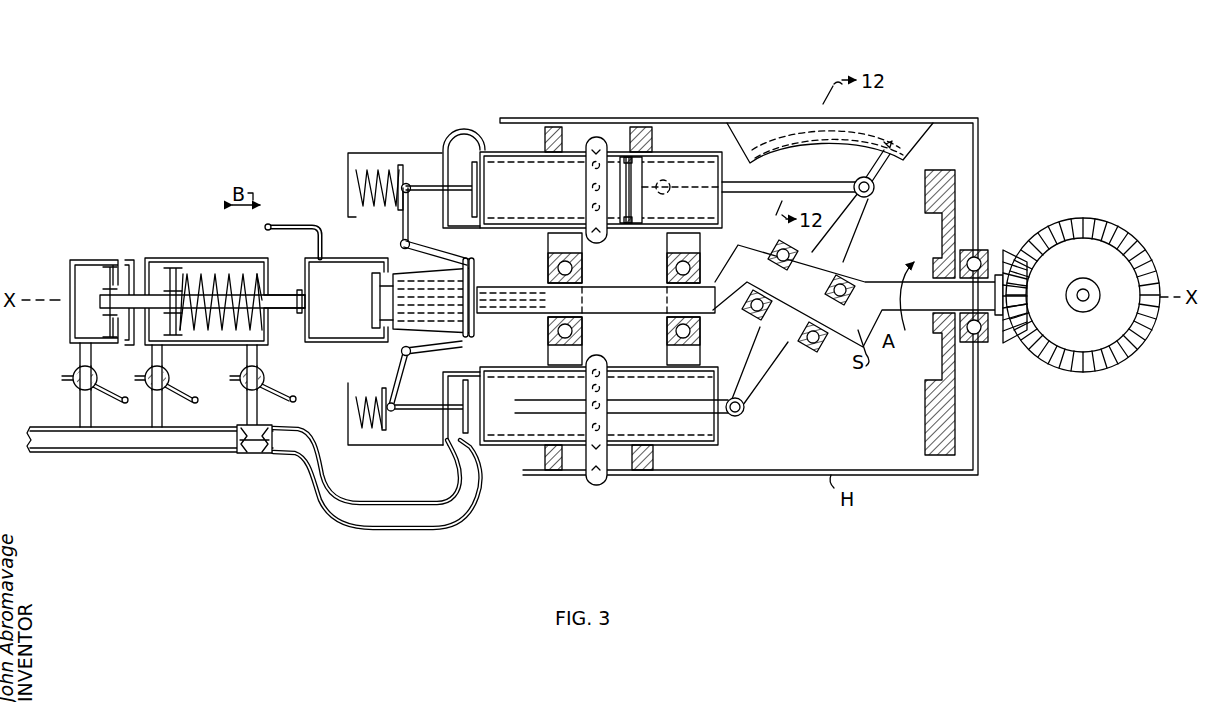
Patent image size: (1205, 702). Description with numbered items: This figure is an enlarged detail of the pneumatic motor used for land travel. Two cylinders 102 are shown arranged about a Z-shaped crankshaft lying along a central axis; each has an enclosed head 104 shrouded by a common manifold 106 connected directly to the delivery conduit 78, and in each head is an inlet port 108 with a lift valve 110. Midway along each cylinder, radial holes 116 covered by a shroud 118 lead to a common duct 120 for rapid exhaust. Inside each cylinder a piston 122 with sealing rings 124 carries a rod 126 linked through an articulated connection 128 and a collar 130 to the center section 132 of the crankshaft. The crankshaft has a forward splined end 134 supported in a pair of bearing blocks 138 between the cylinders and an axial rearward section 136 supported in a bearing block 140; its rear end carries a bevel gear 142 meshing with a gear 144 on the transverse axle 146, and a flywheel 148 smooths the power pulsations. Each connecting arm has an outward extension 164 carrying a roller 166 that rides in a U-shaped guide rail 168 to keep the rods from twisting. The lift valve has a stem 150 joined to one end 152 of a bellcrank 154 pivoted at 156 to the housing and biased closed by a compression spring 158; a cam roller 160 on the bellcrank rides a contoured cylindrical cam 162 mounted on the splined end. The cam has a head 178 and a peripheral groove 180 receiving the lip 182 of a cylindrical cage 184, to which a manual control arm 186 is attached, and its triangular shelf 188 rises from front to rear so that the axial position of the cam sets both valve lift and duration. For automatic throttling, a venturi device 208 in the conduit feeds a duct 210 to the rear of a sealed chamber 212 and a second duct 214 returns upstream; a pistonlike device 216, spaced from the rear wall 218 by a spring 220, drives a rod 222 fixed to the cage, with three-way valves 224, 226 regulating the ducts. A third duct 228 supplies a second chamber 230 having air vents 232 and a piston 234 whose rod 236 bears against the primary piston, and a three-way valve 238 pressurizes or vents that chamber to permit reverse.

The delivery conduit 78 is at (108, 443).
The cylinder 102 is at (495, 150).
The enclosed head 104 is at (478, 220).
The common manifold 106 is at (461, 132).
The inlet port 108 is at (478, 425).
The lift valve 110 is at (460, 420).
The radial holes 116 is at (590, 427).
The shroud 118 is at (601, 356).
The common duct 120 is at (598, 329).
The piston 122 is at (686, 160).
The sealing rings 124 is at (632, 156).
The rod 126 is at (765, 193).
The articulated connection 128 is at (858, 224).
The collar 130 is at (810, 362).
The center section 132 is at (842, 256).
The splined end 134 is at (528, 286).
The axial rearward section 136 is at (895, 313).
The bearing blocks 138 is at (666, 263).
The bearing block 140 is at (988, 344).
The bevel gear 142 is at (1004, 250).
The gear 144 is at (1110, 220).
The transverse axle 146 is at (1092, 310).
The flywheel 148 is at (940, 452).
The stem 150 is at (428, 186).
The end of bellcrank 152 is at (402, 182).
The bellcrank 154 is at (403, 222).
The pivot 156 is at (400, 244).
The compression spring 158 is at (356, 176).
The cam roller 160 is at (474, 342).
The contoured cylindrical cam 162 is at (474, 325).
The outward extension 164 is at (872, 165).
The roller 166 is at (881, 140).
The U-shaped guide rail 168 is at (915, 133).
The head 178 is at (372, 313).
The peripheral groove 180 is at (372, 273).
The lip 182 is at (403, 355).
The cylindrical cage 184 is at (320, 342).
The control arm 186 is at (306, 224).
The shelf 188 is at (430, 350).
The venturi device 208 is at (245, 452).
The duct 210 is at (258, 413).
The sealed chamber 212 is at (210, 262).
The second duct 214 is at (163, 413).
The pistonlike device 216 is at (172, 268).
The rear wall 218 is at (270, 335).
The spring 220 is at (190, 268).
The rod 222 is at (287, 292).
The three-way valve 224 is at (266, 376).
The three-way valve 226 is at (168, 373).
The third duct 228 is at (80, 411).
The second chamber 230 is at (80, 259).
The air vents 232 is at (132, 260).
The piston 234 is at (107, 328).
The rod 236 is at (132, 345).
The three-way valve 238 is at (72, 389).